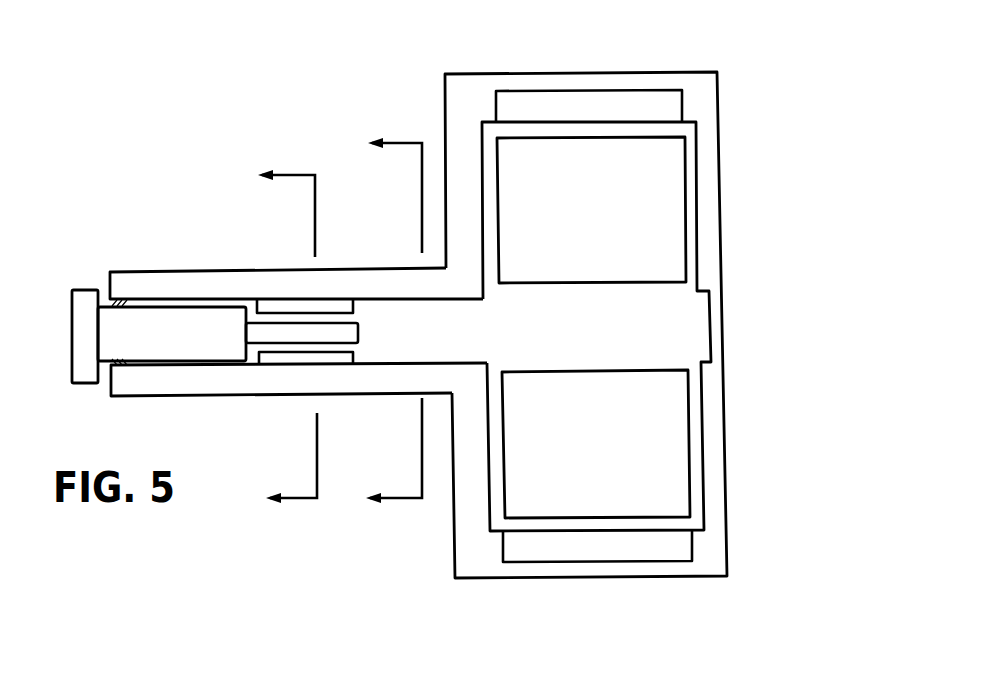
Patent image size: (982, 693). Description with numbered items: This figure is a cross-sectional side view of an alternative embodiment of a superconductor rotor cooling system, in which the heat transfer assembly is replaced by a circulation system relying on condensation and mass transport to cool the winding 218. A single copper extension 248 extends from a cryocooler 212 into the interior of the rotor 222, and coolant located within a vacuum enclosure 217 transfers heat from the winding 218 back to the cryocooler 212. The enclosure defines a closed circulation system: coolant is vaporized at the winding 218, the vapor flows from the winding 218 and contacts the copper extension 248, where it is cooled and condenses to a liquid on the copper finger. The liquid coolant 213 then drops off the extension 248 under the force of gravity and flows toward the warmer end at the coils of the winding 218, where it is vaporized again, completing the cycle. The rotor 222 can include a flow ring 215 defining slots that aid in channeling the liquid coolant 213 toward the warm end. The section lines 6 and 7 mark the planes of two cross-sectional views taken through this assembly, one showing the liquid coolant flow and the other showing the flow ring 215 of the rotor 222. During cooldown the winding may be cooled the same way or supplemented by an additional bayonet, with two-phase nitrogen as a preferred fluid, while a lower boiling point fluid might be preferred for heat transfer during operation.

The cryocooler 212 is at (72, 320).
The liquid coolant 213 is at (415, 362).
The flow ring 215 is at (312, 362).
The vacuum enclosure 217 is at (377, 270).
The winding 218 is at (608, 91).
The rotor 222 is at (465, 74).
The copper extension 248 is at (280, 332).
The section line 6- 6 is at (277, 335).
The section line 7- 7 is at (384, 318).